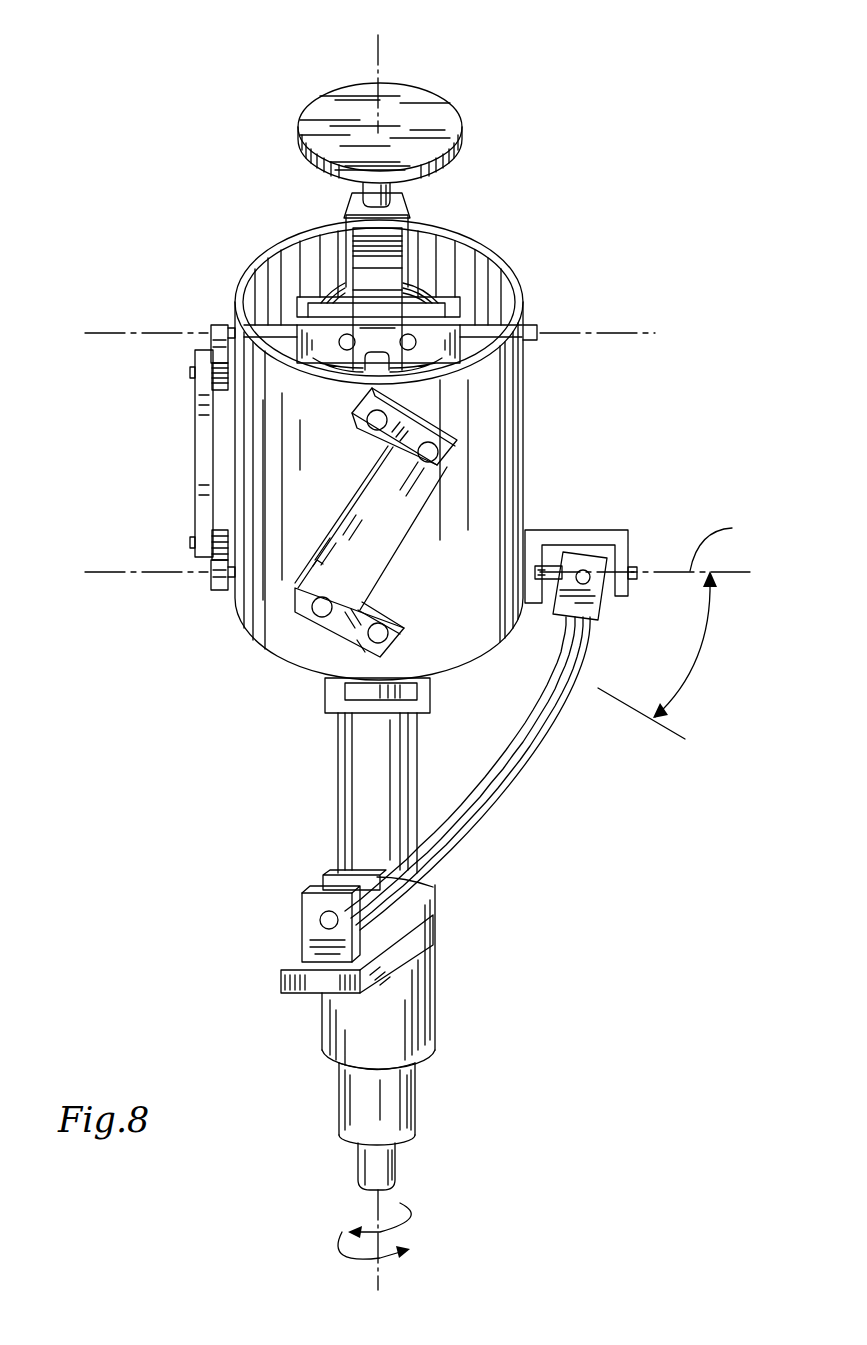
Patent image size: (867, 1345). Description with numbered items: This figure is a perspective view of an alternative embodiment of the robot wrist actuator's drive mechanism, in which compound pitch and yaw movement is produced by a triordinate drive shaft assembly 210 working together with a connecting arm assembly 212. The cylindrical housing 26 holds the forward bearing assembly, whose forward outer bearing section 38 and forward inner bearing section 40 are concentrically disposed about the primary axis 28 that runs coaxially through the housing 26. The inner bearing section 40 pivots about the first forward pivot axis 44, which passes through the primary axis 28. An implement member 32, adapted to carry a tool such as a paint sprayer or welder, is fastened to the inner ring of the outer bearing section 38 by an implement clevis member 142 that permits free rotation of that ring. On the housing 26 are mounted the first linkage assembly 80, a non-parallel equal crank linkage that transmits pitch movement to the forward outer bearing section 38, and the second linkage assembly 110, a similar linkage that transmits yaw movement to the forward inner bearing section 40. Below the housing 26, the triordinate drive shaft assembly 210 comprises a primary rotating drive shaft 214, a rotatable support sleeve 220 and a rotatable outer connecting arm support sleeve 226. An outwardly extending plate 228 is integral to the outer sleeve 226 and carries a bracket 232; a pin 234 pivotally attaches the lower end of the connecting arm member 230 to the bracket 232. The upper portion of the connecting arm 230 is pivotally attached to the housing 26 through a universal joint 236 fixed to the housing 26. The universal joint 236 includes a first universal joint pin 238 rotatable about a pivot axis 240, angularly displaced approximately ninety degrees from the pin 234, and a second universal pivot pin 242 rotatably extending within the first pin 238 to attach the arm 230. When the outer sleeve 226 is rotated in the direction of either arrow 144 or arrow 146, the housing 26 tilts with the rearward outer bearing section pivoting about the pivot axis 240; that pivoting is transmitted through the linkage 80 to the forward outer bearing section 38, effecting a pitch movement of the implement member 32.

The primary axis 28 is at (380, 62).
The implement member 32 is at (373, 193).
The implement clevis member 142 is at (398, 222).
The housing 26 is at (500, 428).
The forward outer bearing section 38 is at (385, 272).
The forward inner bearing section 40 is at (336, 280).
The first forward pivot axis 44 is at (562, 333).
The second linkage assembly 110 is at (203, 437).
The first linkage assembly 80 is at (390, 525).
The universal joint 236 is at (586, 528).
The first universal joint pin 238 is at (553, 573).
The second universal pivot pin 242 is at (590, 582).
The pivot axis 240 is at (686, 630).
The connecting arm assembly 212 is at (499, 773).
The connecting arm member 230 is at (538, 722).
The triordinate drive shaft assembly 210 is at (365, 934).
The bracket 232 is at (305, 903).
The pin 234 is at (328, 923).
The outwardly extending plate 228 is at (300, 985).
The rotatable outer connecting arm support sleeve 226 is at (422, 950).
The rotatable support sleeve 220 is at (400, 1100).
The primary rotating drive shaft 214 is at (382, 1170).
The arrow 144 is at (365, 1225).
The arrow 146 is at (390, 1257).